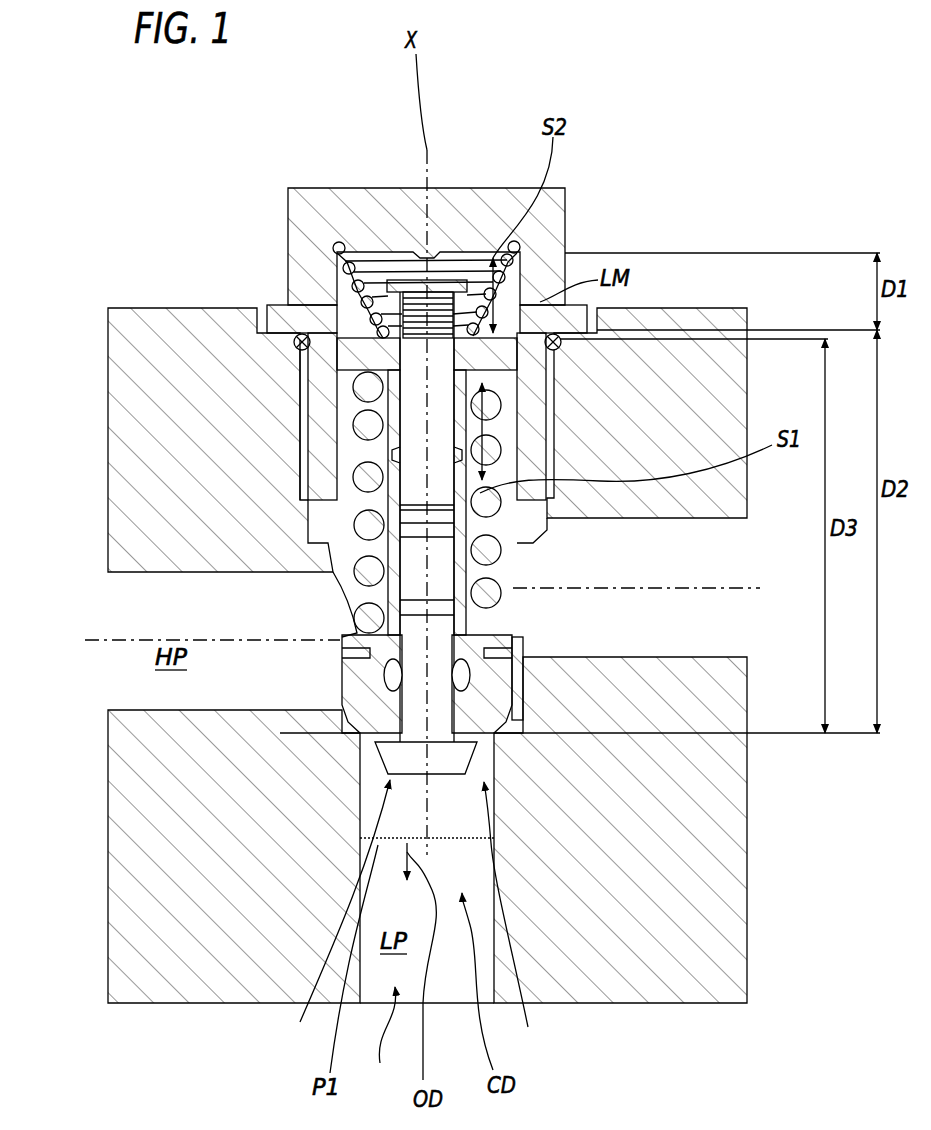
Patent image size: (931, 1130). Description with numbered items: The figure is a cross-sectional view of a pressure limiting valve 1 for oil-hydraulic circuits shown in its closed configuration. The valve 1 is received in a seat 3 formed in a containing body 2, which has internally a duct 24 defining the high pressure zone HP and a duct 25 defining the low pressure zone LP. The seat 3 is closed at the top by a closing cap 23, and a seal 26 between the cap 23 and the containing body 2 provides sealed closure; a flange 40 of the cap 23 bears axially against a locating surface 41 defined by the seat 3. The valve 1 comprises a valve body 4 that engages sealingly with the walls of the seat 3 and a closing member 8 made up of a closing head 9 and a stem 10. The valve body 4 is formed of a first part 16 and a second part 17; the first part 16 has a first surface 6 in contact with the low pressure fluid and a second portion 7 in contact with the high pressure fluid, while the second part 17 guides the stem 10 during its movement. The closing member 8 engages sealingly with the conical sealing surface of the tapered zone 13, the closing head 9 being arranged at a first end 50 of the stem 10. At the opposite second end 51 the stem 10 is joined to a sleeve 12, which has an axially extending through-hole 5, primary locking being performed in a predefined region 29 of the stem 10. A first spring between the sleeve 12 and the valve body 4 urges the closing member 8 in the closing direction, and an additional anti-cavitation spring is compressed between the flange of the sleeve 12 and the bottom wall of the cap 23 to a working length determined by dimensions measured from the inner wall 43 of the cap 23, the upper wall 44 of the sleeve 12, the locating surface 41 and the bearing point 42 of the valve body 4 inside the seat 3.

The pressure limiting valve 1 is at (503, 583).
The containing body 2 is at (753, 405).
The seat 3 is at (293, 480).
The valve body 4 is at (339, 915).
The through-hole 5 is at (390, 448).
The first surface 6 is at (510, 918).
The second portion 7 is at (338, 628).
The closing member 8 is at (413, 562).
The closing head 9 is at (441, 782).
The stem 10 is at (430, 330).
The sleeve 12 is at (348, 387).
The tapered zone 13 is at (355, 705).
The first part 16 is at (352, 733).
The second part 17 is at (380, 600).
The closing cap 23 is at (569, 237).
The duct 24 is at (133, 653).
The duct 25 is at (381, 1041).
The seal 26 is at (562, 346).
The predefined region 29 is at (372, 330).
The flange 40 is at (280, 334).
The locating surface 41 is at (262, 318).
The bearing point 42 is at (503, 740).
The inner wall 43 is at (405, 258).
The upper wall 44 is at (300, 325).
The first end 50 is at (455, 712).
The second end 51 is at (358, 328).